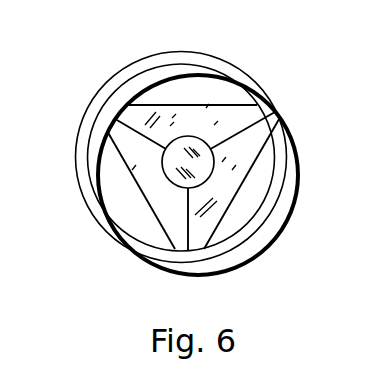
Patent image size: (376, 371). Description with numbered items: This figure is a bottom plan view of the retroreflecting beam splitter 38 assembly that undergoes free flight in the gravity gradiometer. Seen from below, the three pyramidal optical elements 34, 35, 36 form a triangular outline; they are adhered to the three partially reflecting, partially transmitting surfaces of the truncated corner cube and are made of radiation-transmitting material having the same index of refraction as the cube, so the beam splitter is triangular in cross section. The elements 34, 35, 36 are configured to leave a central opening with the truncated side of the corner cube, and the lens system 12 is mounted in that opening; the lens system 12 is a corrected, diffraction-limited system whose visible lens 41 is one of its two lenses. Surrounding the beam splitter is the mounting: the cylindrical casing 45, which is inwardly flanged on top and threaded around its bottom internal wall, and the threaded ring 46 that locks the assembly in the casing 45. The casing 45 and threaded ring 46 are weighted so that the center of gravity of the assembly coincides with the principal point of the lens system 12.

The lens system 12 is at (205, 148).
The optical element 34 is at (135, 177).
The optical element 35 is at (251, 140).
The optical element 36 is at (200, 131).
The retroreflecting beam splitter 38 is at (178, 97).
The lens 41 is at (209, 146).
The cylindrical casing 45 is at (296, 167).
The threaded ring 46 is at (280, 201).